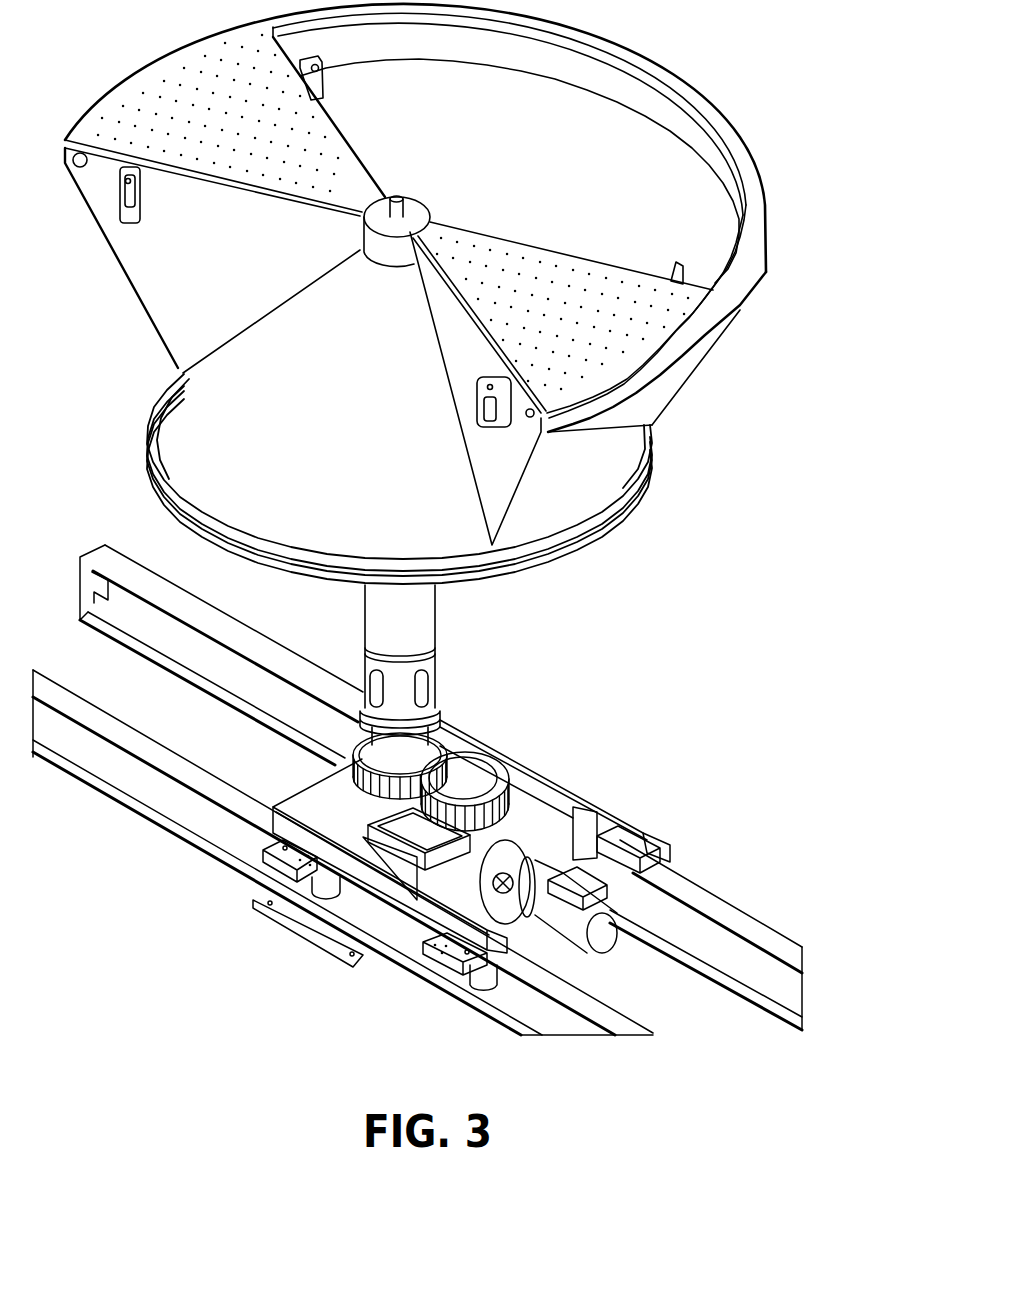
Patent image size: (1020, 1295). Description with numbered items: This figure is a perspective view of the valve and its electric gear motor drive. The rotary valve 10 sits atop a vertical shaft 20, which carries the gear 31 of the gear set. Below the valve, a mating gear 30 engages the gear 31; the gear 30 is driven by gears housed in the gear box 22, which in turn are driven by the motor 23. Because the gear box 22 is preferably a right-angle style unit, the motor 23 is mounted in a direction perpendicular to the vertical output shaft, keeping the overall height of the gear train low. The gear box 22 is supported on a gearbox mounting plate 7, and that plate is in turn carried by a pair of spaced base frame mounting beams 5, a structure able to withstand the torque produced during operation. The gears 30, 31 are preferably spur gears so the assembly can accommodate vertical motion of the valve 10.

The rotary valve 10 is at (702, 350).
The shaft 20 is at (407, 627).
The gear 31 is at (380, 784).
The gear 30 is at (455, 821).
The gear box 22 is at (450, 822).
The gearbox mounting plate 7 is at (335, 827).
The base frame mounting beams 5 is at (225, 670).
The motor 23 is at (566, 924).